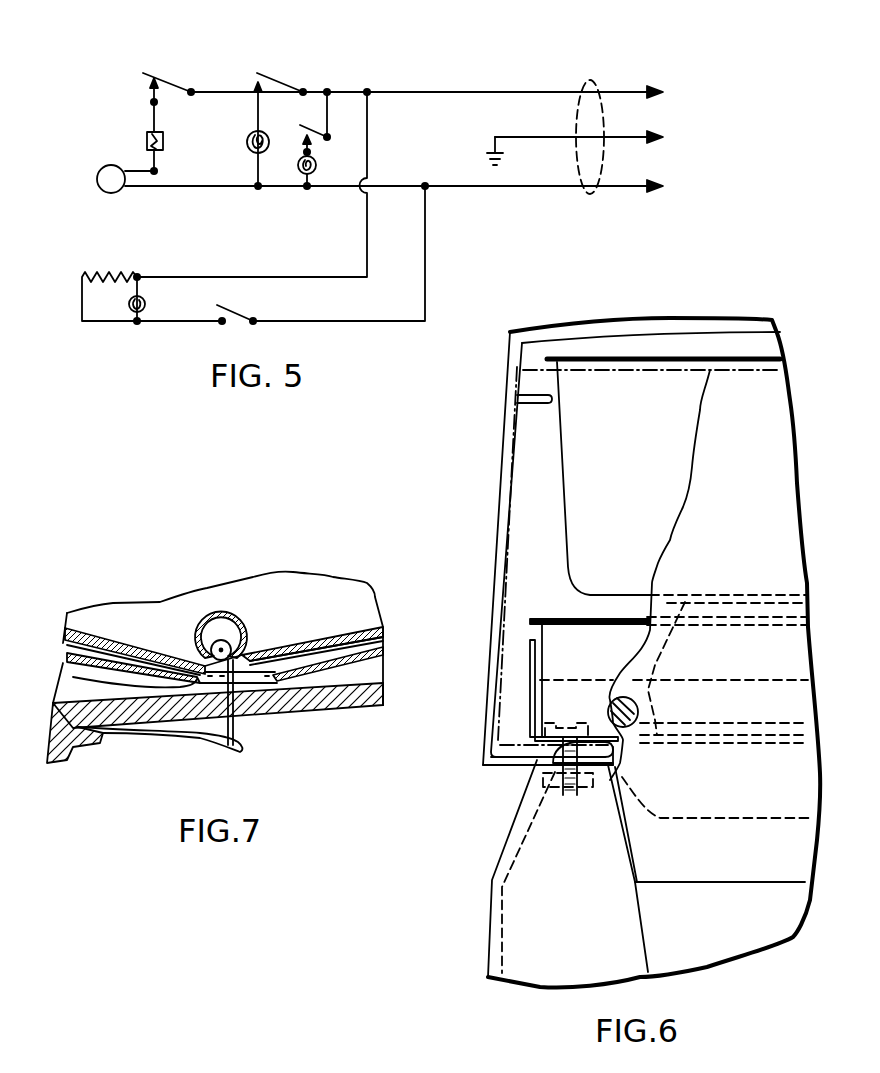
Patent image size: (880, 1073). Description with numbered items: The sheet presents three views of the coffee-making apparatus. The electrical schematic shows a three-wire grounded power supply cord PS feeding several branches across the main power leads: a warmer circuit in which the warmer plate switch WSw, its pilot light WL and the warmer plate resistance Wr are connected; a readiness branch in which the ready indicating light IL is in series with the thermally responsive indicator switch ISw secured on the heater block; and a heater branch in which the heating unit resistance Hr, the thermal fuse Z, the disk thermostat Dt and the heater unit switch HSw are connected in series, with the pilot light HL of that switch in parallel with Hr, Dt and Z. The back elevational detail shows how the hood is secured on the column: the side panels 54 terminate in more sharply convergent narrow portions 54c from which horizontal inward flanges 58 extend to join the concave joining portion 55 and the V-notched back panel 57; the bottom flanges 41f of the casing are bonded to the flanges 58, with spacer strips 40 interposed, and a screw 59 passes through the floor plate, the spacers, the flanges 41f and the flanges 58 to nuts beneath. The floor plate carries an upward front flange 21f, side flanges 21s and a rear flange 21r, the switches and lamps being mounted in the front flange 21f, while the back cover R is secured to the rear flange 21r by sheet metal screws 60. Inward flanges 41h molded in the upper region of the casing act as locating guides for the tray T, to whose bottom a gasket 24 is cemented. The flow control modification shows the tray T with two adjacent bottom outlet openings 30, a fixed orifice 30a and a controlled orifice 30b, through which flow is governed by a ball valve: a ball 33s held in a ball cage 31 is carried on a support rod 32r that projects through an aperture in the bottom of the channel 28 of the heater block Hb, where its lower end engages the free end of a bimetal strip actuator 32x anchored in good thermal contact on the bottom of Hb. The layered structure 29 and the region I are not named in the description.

In FIG. 5, the disk thermostat Dt is at (143, 74).
In FIG. 5, the thermal fuse Z is at (147, 139).
In FIG. 5, the heating element Hr is at (98, 170).
In FIG. 5, the heater pilot light HL is at (246, 143).
In FIG. 5, the heater unit switch HSw is at (300, 66).
In FIG. 5, the thermal indicator switch ISw is at (330, 124).
In FIG. 5, the ready indicating light IL is at (316, 161).
In FIG. 5, the power supply cord PS is at (598, 84).
In FIG. 5, the warmer plate resistance Wr is at (151, 284).
In FIG. 5, the warmer pilot light WL is at (145, 306).
In FIG. 5, the warmer plate switch WSw is at (237, 323).
In FIG. 7, the tray T is at (107, 613).
In FIG. 7, the slats 29 is at (67, 643).
In FIG. 7, the hinge 30 is at (187, 650).
In FIG. 7, the fixed orifice 30a is at (197, 679).
In FIG. 7, the controlled orifice 30b is at (255, 646).
In FIG. 7, the ball cage 31 is at (252, 641).
In FIG. 7, the ball 33s is at (200, 634).
In FIG. 7, the channel 28 is at (108, 697).
In FIG. 7, the rod 32r is at (238, 730).
In FIG. 7, the bimetal strip actuator 32x is at (203, 740).
In FIG. 7, the heater block Hb is at (381, 708).
In FIG. 6, the heater block Hb is at (775, 615).
In FIG. 6, the inner liner I is at (633, 571).
In FIG. 6, the inward flanges 41h is at (542, 405).
In FIG. 6, the gasket 24 is at (717, 598).
In FIG. 6, the front flange 21f is at (533, 618).
In FIG. 6, the side flanges 21s is at (530, 658).
In FIG. 6, the rear flange 21r is at (762, 665).
In FIG. 6, the sheet metal screws 60 is at (655, 690).
In FIG. 6, the screw 59 is at (577, 723).
In FIG. 6, the spacer strips 40 is at (500, 740).
In FIG. 6, the bottom flanges 41f is at (492, 768).
In FIG. 6, the inward flanges 58 is at (560, 738).
In FIG. 6, the side panels 54 is at (490, 918).
In FIG. 6, the narrow portions 54c is at (507, 848).
In FIG. 6, the back panel 57 is at (581, 928).
In FIG. 6, the joining portion 55 is at (769, 928).
In FIG. 6, the back cover R is at (733, 860).